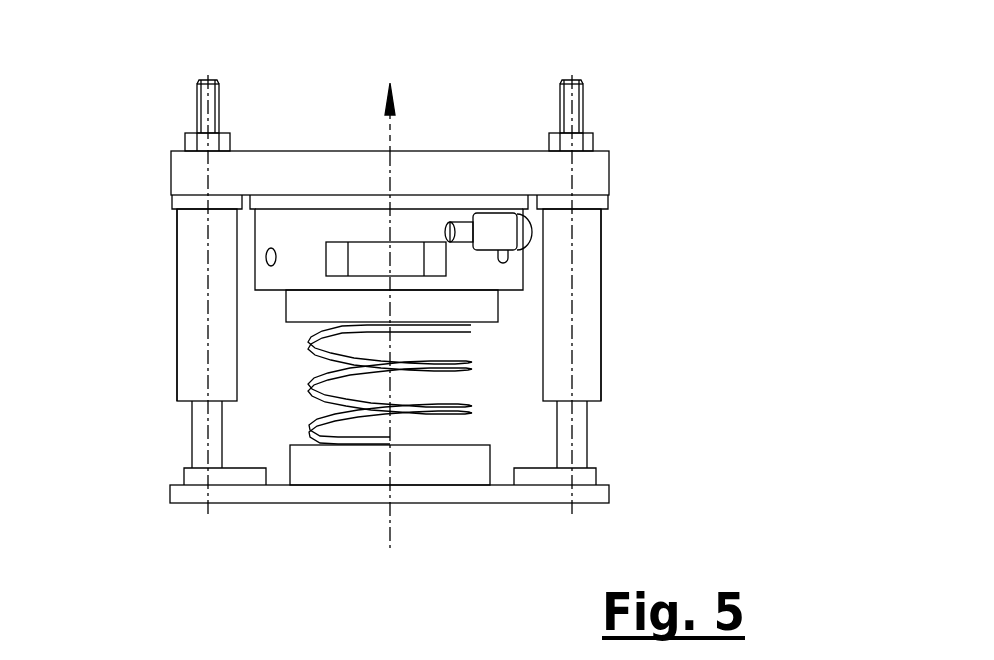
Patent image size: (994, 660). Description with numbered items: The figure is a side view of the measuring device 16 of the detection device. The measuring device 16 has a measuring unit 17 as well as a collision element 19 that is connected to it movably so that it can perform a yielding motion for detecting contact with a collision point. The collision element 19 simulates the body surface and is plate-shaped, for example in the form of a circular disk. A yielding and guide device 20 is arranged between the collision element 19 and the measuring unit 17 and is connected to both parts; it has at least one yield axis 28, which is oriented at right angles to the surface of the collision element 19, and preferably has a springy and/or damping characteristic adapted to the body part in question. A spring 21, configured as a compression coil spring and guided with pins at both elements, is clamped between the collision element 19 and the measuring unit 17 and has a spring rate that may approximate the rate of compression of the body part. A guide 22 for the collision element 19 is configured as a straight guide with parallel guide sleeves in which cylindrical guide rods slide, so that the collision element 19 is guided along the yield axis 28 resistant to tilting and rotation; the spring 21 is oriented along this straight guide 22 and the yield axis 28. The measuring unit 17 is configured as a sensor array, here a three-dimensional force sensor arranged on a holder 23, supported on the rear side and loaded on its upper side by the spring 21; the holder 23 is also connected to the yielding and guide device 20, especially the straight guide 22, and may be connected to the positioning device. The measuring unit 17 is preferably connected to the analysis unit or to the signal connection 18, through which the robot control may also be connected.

The measuring device 16 is at (655, 347).
The measuring unit 17 is at (371, 258).
The signal connection 18 is at (491, 222).
The collision element 19 is at (493, 495).
The yielding and guide device 20 is at (165, 322).
The spring 21 is at (326, 393).
The guide 22 is at (195, 282).
The holder 23 is at (433, 173).
The yield axis 28 is at (351, 348).